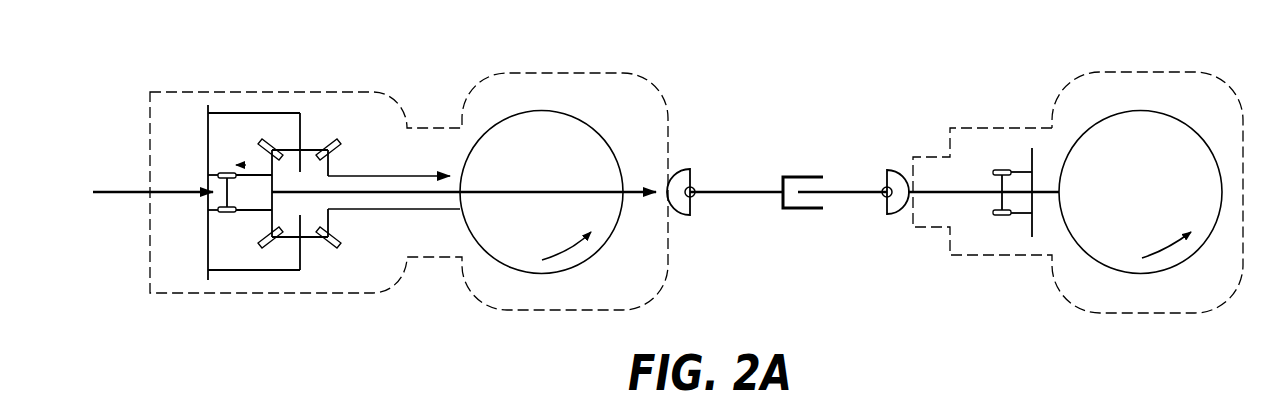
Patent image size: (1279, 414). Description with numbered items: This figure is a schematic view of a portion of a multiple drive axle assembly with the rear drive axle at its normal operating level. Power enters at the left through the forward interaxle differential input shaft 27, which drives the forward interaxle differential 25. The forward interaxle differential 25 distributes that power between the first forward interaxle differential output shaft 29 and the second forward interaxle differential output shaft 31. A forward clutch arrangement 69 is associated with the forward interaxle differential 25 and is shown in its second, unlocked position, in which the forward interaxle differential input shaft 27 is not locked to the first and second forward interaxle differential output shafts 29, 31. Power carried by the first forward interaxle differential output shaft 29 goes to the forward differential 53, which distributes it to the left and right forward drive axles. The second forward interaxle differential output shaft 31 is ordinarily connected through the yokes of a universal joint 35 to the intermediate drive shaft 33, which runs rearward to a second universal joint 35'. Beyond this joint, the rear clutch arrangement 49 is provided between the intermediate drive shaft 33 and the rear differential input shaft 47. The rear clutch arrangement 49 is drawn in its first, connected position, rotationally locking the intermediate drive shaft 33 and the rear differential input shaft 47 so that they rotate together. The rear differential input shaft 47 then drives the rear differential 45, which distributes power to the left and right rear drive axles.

The forward interaxle differential 25 is at (311, 128).
The forward interaxle differential input shaft 27 is at (132, 194).
The first forward interaxle differential output shaft 29 is at (357, 175).
The second forward interaxle differential output shaft 31 is at (637, 187).
The intermediate drive shaft 33 is at (793, 167).
The universal joint 35 is at (713, 218).
The universal joint 35' is at (860, 216).
The rear differential 45 is at (1170, 105).
The rear differential input shaft 47 is at (1043, 190).
The rear clutch arrangement 49 is at (997, 153).
The forward differential 53 is at (563, 104).
The forward clutch arrangement 69 is at (228, 222).